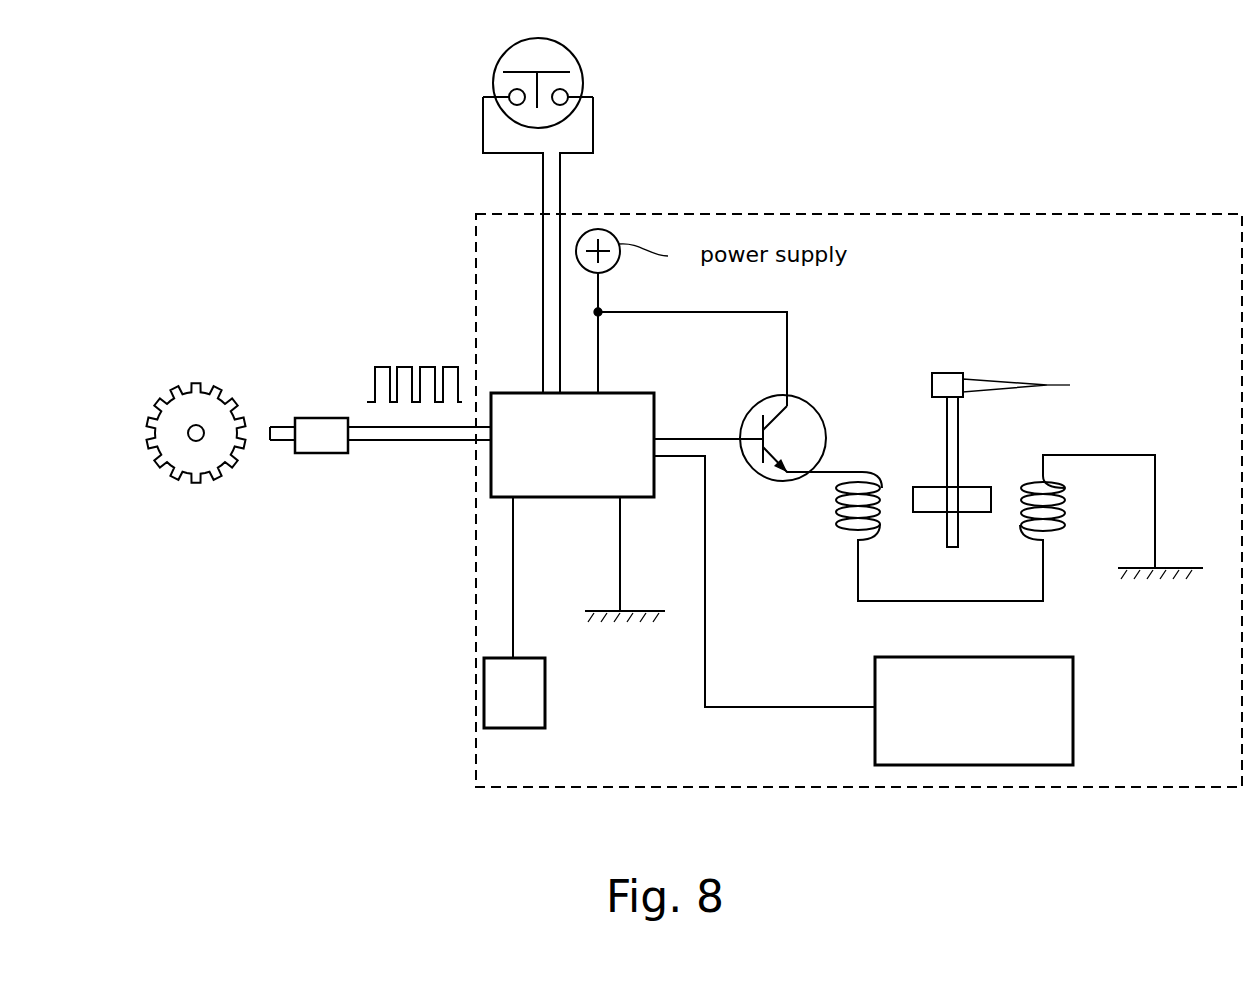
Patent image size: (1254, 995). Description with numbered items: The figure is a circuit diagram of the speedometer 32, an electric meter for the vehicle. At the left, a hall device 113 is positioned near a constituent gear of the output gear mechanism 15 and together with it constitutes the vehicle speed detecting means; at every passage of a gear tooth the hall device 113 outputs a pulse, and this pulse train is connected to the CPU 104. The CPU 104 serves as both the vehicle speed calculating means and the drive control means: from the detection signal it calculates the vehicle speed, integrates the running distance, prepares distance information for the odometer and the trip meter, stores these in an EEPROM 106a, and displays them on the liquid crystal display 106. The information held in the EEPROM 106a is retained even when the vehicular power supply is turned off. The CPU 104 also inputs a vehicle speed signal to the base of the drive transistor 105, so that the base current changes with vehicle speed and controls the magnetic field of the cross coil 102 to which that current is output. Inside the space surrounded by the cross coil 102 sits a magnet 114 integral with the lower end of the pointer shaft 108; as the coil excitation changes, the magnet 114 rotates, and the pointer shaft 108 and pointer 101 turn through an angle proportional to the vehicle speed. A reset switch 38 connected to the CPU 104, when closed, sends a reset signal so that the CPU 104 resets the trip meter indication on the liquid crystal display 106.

The speedometer 32 is at (1046, 213).
The reset switch 38 is at (568, 64).
The CPU 104 is at (585, 497).
The drive transistor 105 is at (810, 398).
The cross coil 102 is at (838, 530).
The pointer 101 is at (1007, 380).
The pointer shaft 108 is at (945, 432).
The magnet 114 is at (970, 515).
The EEPROM 106a is at (545, 680).
The liquid crystal display 106 is at (1073, 710).
The hall device 113 is at (320, 455).
The output gear mechanism 15 is at (200, 485).